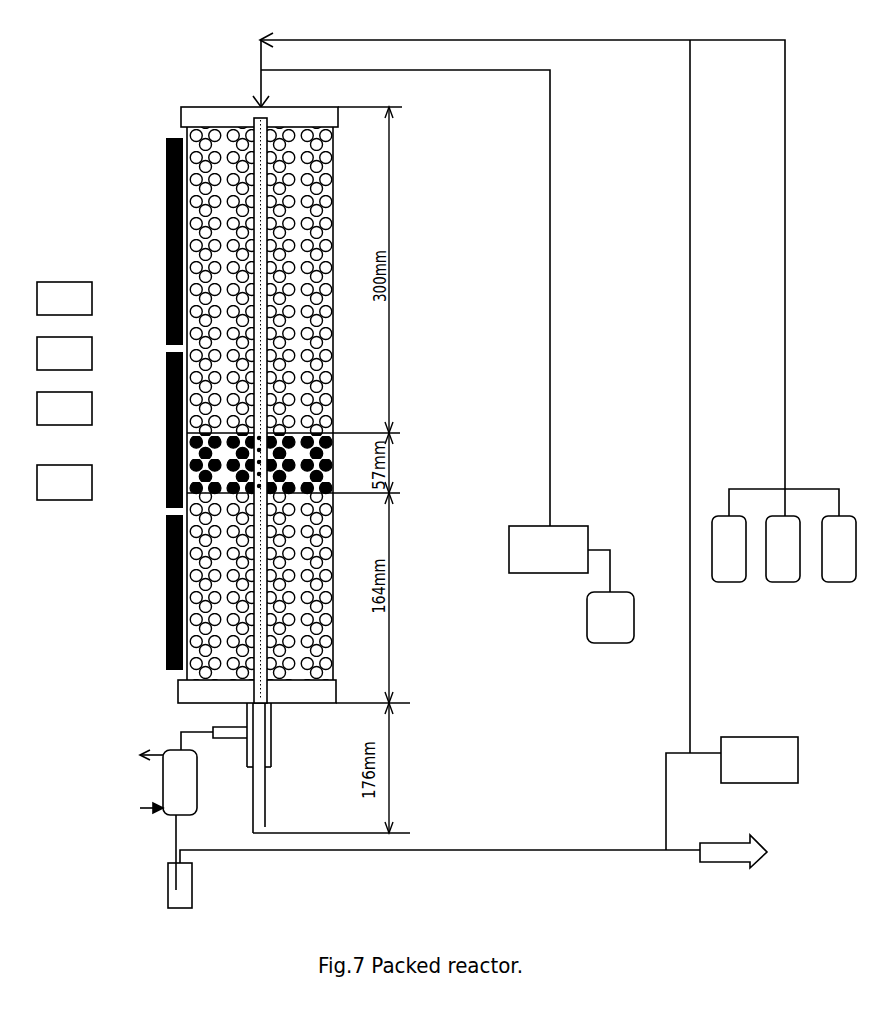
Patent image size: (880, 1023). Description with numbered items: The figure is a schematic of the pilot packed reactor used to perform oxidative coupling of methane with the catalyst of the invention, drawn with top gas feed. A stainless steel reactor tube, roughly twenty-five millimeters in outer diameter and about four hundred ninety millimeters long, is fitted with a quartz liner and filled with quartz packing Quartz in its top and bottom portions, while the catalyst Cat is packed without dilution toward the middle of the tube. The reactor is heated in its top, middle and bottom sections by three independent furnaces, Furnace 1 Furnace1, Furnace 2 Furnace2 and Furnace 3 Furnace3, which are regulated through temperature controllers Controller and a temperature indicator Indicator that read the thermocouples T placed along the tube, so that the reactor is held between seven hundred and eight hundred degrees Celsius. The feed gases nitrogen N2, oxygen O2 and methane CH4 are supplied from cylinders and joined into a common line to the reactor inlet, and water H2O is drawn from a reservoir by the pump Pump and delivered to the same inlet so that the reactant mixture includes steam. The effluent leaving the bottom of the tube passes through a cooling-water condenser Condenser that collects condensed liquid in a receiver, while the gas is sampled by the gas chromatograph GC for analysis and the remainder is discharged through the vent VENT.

The Furnace 1 Furnace1 is at (165, 272).
The Furnace 2 Furnace2 is at (167, 383).
The Furnace 3 Furnace3 is at (183, 600).
The quartz packing Quartz is at (274, 403).
The catalyst Cat is at (274, 463).
The thermocouples T is at (422, 479).
The controller Controller is at (23, 280).
The indicator Indicator is at (23, 447).
The condenser Condenser is at (126, 782).
The pump Pump is at (548, 549).
The water H2O is at (610, 617).
The nitrogen N2 is at (729, 549).
The oxygen O2 is at (783, 549).
The methane CH4 is at (839, 549).
The gas chromatograph GC is at (759, 760).
The vent VENT is at (733, 851).